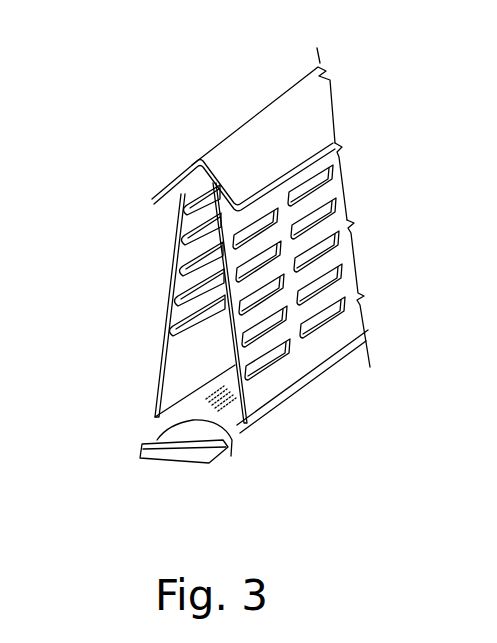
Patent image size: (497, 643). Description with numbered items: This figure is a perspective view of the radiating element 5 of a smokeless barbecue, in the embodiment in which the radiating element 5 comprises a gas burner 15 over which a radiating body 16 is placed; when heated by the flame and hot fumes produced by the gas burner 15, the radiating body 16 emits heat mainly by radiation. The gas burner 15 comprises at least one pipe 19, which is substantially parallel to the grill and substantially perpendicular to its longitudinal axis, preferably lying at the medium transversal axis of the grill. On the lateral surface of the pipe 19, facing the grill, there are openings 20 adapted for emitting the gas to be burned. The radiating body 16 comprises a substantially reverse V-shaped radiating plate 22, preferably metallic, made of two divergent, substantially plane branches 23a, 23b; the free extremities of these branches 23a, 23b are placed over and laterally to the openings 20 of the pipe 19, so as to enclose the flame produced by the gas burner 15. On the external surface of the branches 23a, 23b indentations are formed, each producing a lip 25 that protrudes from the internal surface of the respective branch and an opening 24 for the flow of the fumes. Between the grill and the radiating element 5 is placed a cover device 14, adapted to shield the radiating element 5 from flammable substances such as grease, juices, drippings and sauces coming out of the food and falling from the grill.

The radiating element 5 is at (342, 395).
The cover device 14 is at (296, 108).
The gas burner 15 is at (176, 469).
The radiating body 16 is at (350, 182).
The pipe 19 is at (233, 426).
The openings 20 is at (217, 402).
The radiating plate 22 is at (361, 232).
The branch 23a is at (264, 390).
The branch 23b is at (150, 400).
The opening 24 is at (318, 181).
The lip 25 is at (189, 206).